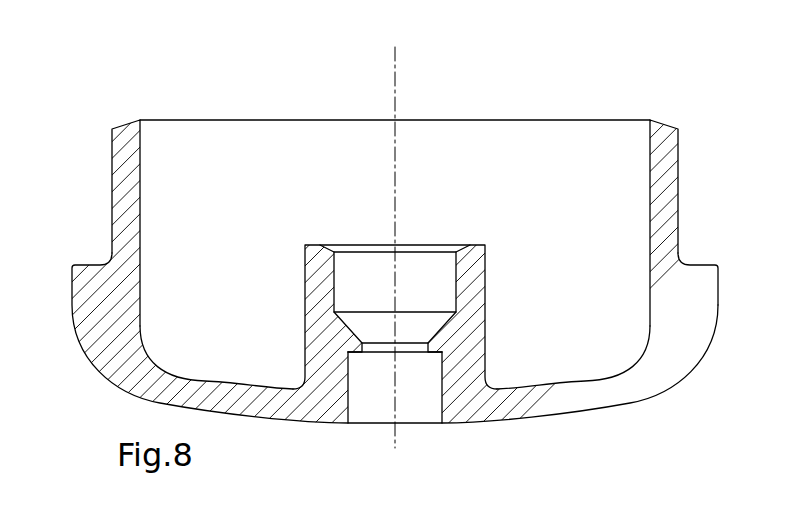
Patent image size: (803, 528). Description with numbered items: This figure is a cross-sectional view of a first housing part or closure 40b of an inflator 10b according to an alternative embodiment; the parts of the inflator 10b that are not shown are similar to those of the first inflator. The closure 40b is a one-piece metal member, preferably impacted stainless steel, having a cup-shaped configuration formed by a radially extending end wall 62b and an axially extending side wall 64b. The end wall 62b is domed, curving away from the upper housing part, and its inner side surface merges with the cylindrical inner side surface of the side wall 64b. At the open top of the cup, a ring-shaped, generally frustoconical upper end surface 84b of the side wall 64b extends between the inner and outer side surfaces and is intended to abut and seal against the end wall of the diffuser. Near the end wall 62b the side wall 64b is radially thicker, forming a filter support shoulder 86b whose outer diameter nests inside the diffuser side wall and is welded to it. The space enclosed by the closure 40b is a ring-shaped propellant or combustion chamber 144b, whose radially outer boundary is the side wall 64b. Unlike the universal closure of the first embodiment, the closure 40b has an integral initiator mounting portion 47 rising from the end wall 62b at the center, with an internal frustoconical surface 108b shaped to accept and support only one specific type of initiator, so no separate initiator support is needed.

The inflator 10b is at (690, 83).
The closure 40b is at (580, 85).
The upper end surface 84b is at (128, 123).
The side wall 64b is at (667, 190).
The combustion chamber 144b is at (596, 277).
The end wall 62b is at (553, 397).
The filter support shoulder 86b is at (688, 307).
The initiator mounting portion 47 is at (305, 285).
The internal frustoconical surface 108b is at (345, 330).